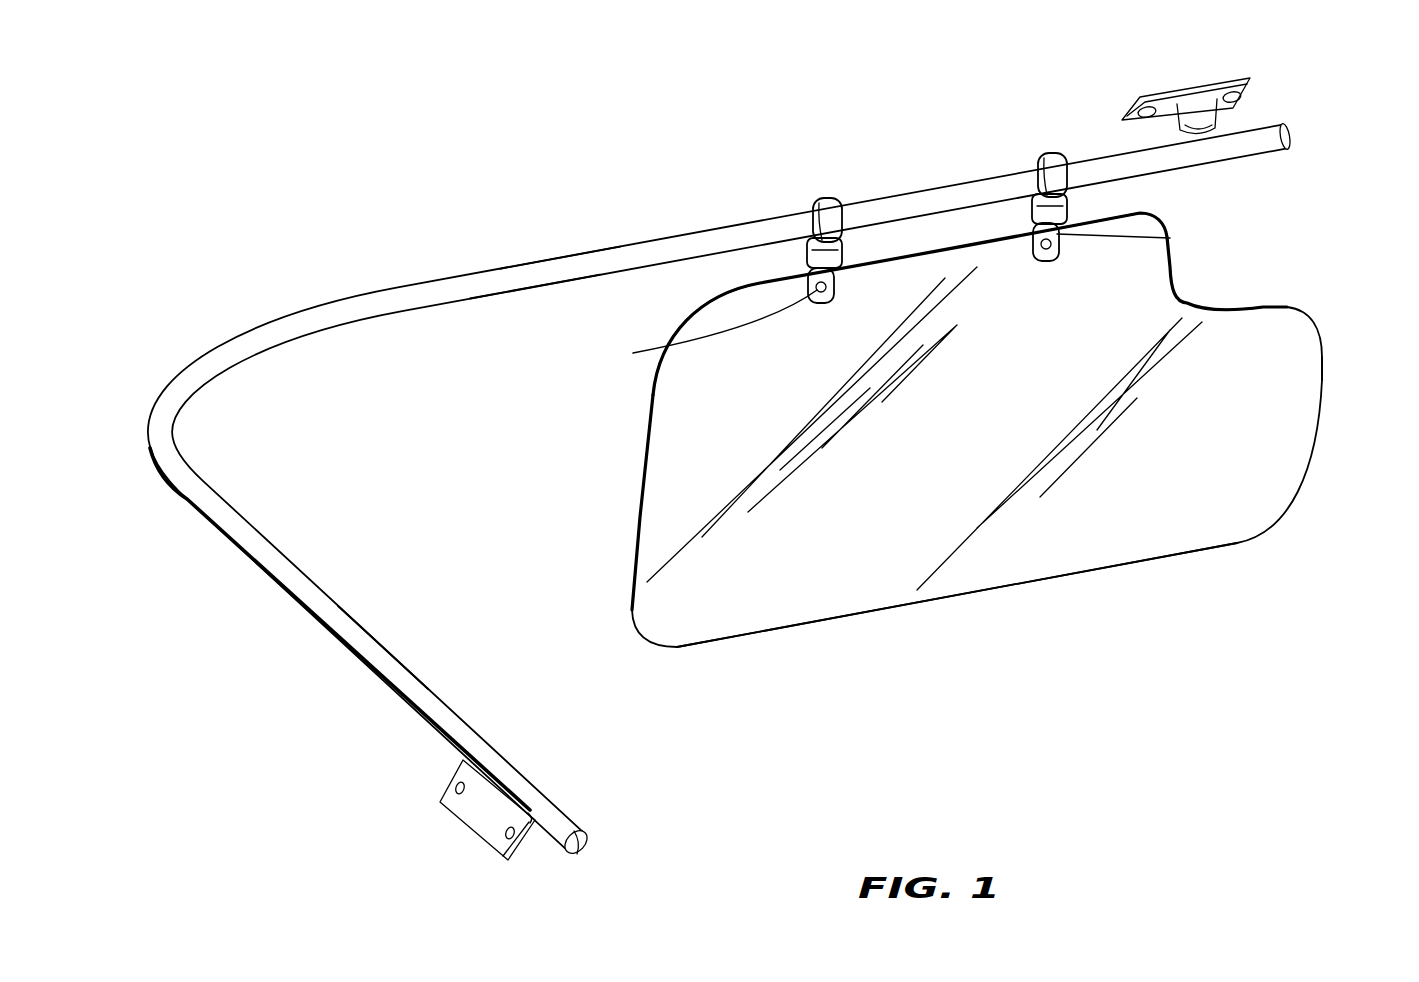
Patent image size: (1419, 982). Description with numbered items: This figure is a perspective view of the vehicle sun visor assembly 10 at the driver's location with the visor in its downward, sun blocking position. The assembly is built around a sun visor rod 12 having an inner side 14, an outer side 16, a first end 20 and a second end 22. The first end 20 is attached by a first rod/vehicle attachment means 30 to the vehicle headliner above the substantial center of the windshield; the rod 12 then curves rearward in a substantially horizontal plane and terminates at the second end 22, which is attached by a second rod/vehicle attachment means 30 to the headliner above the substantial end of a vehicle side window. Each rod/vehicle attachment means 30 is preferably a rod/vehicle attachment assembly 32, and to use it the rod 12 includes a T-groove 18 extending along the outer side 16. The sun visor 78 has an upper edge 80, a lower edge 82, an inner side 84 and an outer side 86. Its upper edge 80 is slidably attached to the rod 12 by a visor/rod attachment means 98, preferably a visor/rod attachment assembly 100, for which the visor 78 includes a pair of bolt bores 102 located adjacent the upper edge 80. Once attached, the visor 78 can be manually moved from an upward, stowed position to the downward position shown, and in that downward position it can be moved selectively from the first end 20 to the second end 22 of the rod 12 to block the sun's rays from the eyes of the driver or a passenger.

The vehicle sun visor assembly 10 is at (305, 235).
The sun visor rod 12 is at (660, 240).
The inner side 14 is at (528, 286).
The outer side 16 is at (568, 268).
The T-groove 18 is at (275, 590).
The first end 20 is at (1286, 137).
The second end 22 is at (590, 842).
The rod/vehicle attachment means 30 is at (482, 818).
The rod/vehicle attachment assembly 32 is at (1245, 78).
The sun visor 78 is at (1237, 350).
The upper edge 80 is at (1107, 220).
The lower edge 82 is at (1123, 560).
The inner side 84 is at (1323, 378).
The outer side 86 is at (640, 478).
The visor/rod attachment means 98 is at (821, 196).
The visor/rod attachment assembly 100 is at (1082, 117).
The bolt bores 102 is at (655, 351).